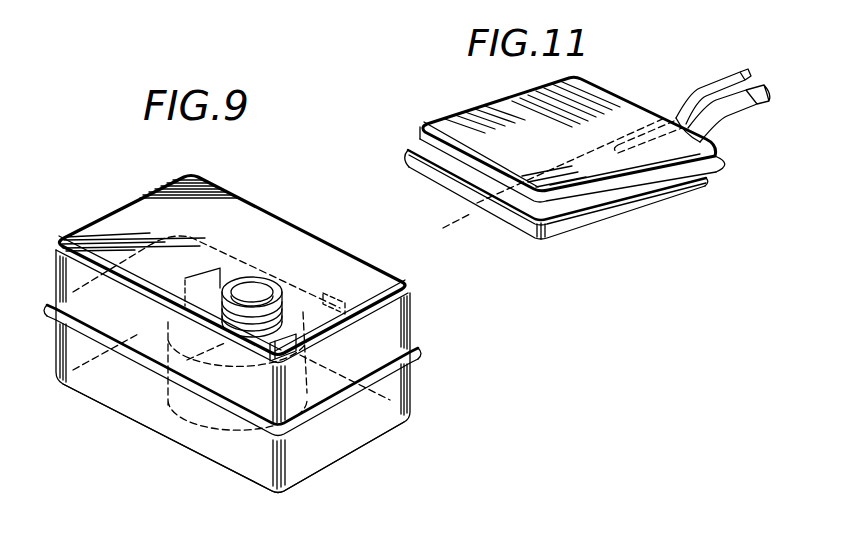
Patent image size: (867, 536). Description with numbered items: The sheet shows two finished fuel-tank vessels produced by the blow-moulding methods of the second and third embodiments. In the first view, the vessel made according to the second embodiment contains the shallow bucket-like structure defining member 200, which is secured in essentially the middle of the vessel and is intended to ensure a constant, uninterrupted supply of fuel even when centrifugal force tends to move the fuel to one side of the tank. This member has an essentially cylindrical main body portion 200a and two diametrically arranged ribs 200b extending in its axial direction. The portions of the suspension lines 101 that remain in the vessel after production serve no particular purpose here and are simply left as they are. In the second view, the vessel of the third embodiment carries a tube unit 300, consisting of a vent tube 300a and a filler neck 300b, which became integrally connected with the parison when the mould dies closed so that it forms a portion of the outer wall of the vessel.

In FIG. 9, the suspension lines 101 is at (295, 280).
In FIG. 9, the structure defining member 200 is at (310, 398).
In FIG. 9, the main body portion 200a is at (233, 390).
In FIG. 9, the ribs 200b is at (252, 246).
In FIG. 11, the tube unit 300 is at (565, 158).
In FIG. 11, the vent tube 300a is at (697, 88).
In FIG. 11, the filler neck 300b is at (724, 118).